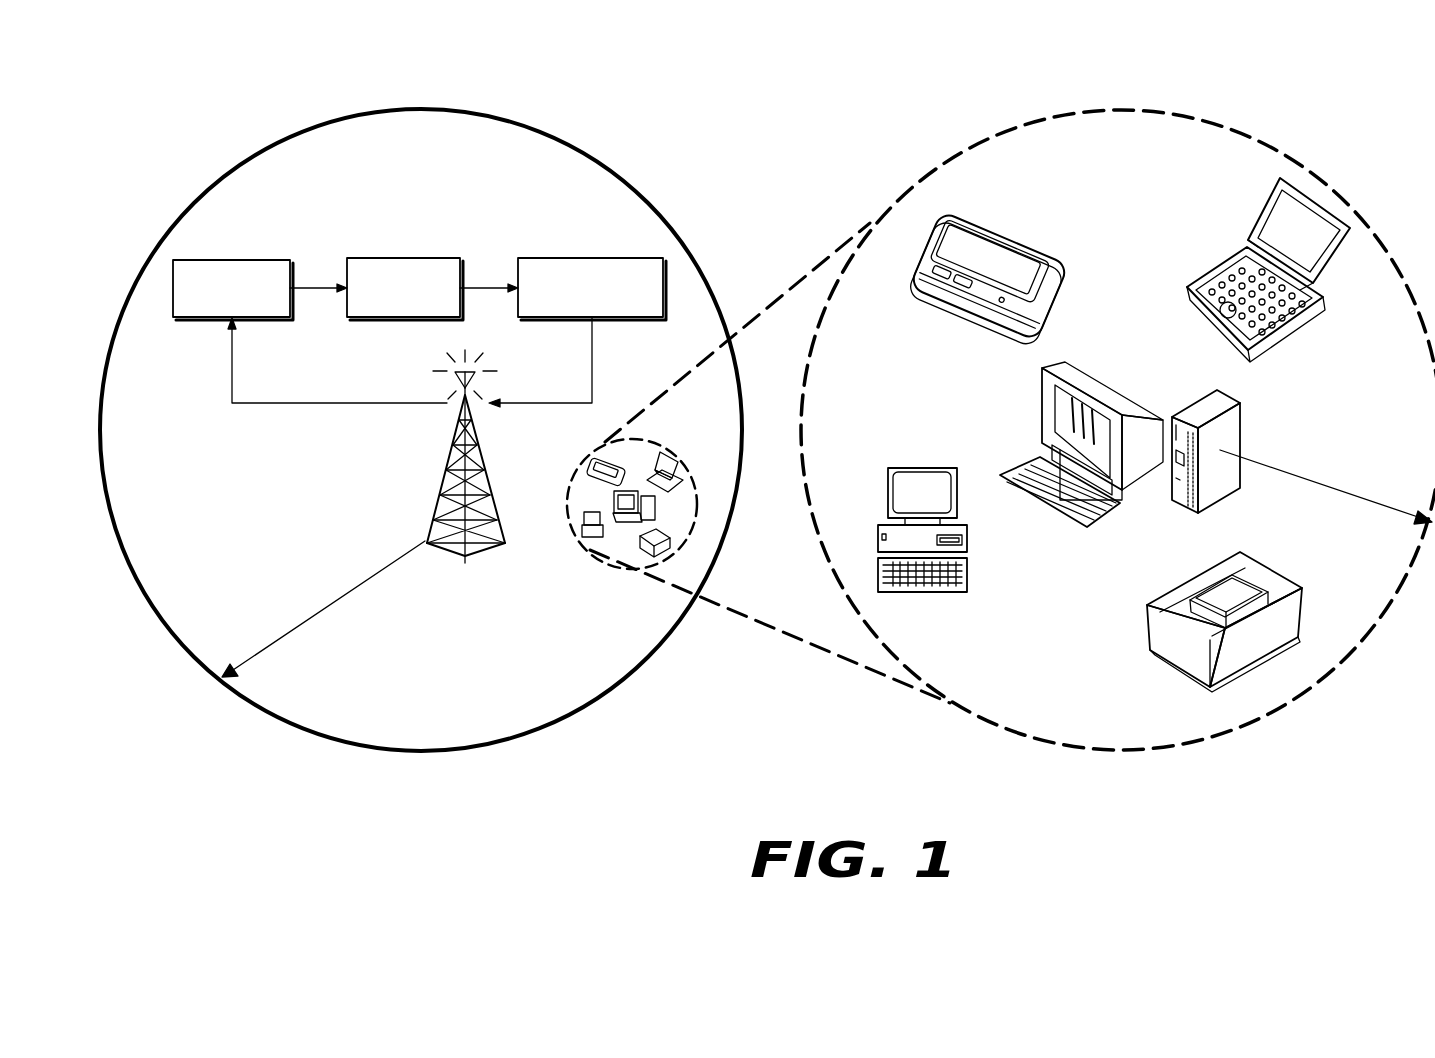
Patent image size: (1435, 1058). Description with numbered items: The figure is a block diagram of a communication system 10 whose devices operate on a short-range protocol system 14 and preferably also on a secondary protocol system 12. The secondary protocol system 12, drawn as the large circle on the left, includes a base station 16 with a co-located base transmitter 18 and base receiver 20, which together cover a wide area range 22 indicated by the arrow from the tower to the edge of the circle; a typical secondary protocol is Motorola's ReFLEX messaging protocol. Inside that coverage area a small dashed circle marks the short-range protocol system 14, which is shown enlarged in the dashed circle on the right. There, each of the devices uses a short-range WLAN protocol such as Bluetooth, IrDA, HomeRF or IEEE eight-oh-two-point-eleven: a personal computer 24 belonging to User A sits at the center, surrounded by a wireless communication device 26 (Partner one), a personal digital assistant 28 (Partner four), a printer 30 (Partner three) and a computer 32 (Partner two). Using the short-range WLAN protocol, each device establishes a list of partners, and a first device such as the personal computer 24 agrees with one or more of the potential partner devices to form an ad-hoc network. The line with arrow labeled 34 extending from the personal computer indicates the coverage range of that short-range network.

The communication system 10 is at (777, 788).
The secondary protocol system 12 is at (572, 140).
The short-range protocol system 14 is at (583, 547).
The base station 16 is at (363, 258).
The base transmitter 18 is at (548, 258).
The base receiver 20 is at (260, 258).
The wide area range 22 is at (367, 580).
The personal computer 24 is at (1163, 410).
The wireless communication device 26 is at (988, 228).
The personal digital assistant 28 is at (1258, 222).
The printer 30 is at (1258, 568).
The computer 32 is at (920, 468).
The coverage range indicator 34 is at (1292, 470).